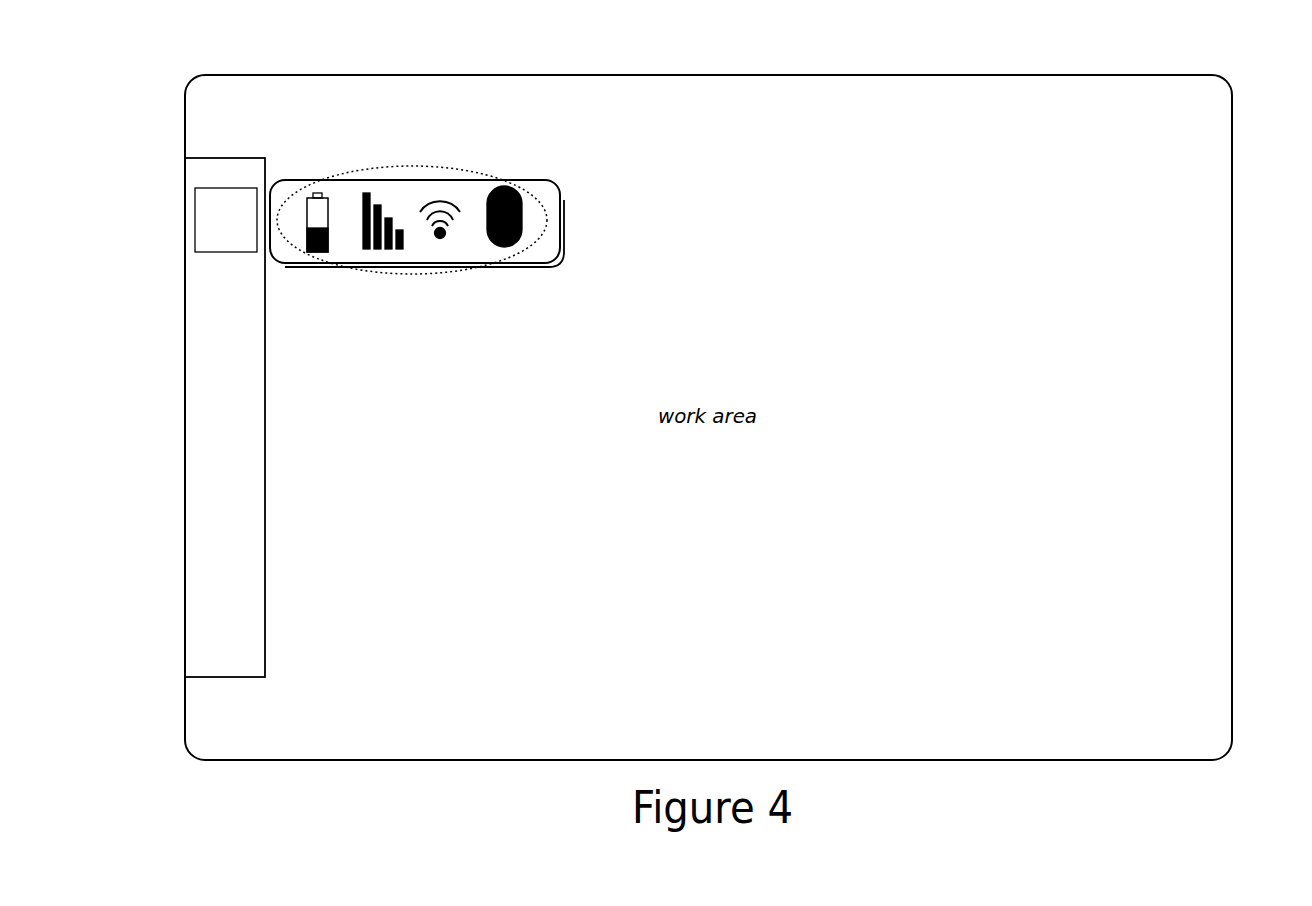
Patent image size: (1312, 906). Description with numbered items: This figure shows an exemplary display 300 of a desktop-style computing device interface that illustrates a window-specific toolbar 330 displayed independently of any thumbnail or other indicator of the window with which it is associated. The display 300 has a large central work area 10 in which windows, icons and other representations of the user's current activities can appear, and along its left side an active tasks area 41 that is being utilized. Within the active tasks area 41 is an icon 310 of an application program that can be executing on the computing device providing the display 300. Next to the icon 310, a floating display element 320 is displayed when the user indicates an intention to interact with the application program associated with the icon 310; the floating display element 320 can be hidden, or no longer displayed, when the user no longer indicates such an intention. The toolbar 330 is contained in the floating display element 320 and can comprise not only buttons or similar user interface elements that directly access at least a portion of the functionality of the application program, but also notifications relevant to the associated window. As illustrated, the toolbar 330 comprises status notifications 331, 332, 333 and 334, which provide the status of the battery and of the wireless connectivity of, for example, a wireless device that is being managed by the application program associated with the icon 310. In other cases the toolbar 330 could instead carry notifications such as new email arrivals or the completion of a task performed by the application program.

The central work area 10 is at (1203, 242).
The display 300 is at (185, 145).
The active tasks area 41 is at (207, 593).
The icon 310 is at (226, 220).
The floating display element 320 is at (563, 220).
The toolbar 330 is at (412, 165).
The status notification 331 is at (313, 250).
The status notification 332 is at (377, 249).
The status notification 333 is at (440, 239).
The status notification 334 is at (498, 250).